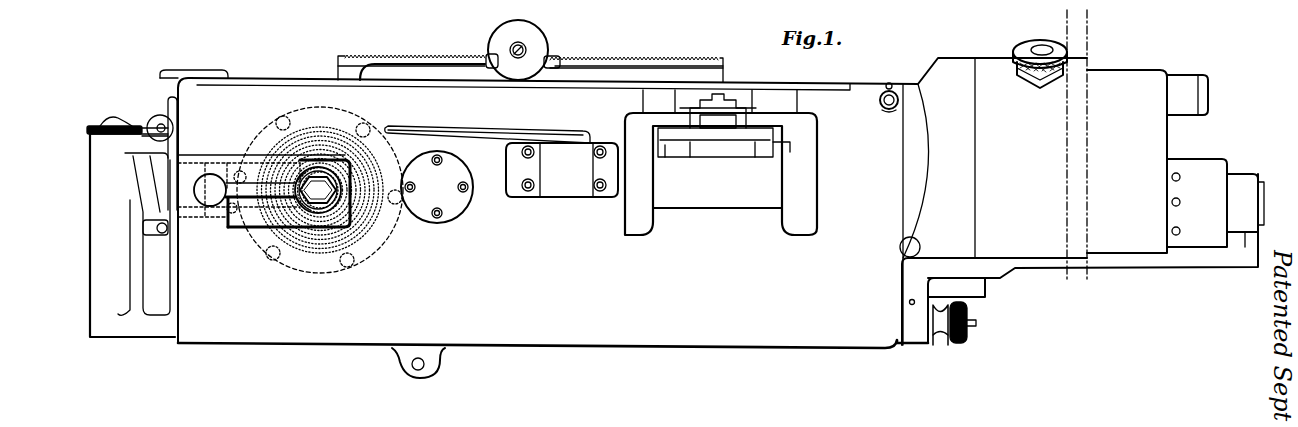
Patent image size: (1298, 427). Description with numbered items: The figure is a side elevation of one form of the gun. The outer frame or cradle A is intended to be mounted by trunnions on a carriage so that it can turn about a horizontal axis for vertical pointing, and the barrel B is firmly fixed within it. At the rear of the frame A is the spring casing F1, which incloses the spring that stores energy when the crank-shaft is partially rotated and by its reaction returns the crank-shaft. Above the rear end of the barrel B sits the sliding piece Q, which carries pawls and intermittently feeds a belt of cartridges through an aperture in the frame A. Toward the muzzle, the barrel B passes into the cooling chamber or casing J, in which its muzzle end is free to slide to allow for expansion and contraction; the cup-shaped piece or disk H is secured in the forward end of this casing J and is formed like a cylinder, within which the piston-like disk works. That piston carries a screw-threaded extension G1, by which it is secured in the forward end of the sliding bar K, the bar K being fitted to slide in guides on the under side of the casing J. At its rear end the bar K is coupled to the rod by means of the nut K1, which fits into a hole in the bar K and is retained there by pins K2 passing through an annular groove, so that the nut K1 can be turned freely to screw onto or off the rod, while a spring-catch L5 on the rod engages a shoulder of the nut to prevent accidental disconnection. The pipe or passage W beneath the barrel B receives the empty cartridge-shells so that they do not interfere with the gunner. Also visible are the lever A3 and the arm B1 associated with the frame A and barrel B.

The outer frame or cradle A is at (587, 194).
The lever arm A3 is at (498, 129).
The barrel B is at (289, 193).
The ball-ended arm B1 is at (252, 191).
The spring casing F1 is at (368, 230).
The sliding piece Q is at (728, 112).
The cooling chamber or casing J is at (1095, 161).
The sliding bar K is at (1080, 259).
The nut K1 is at (940, 325).
The pins K2 is at (906, 293).
The pipe or passage W is at (956, 287).
The stud L5 is at (967, 322).
The cup-shaped piece or disk H is at (1197, 203).
The screw-threaded extension G1 is at (1270, 190).